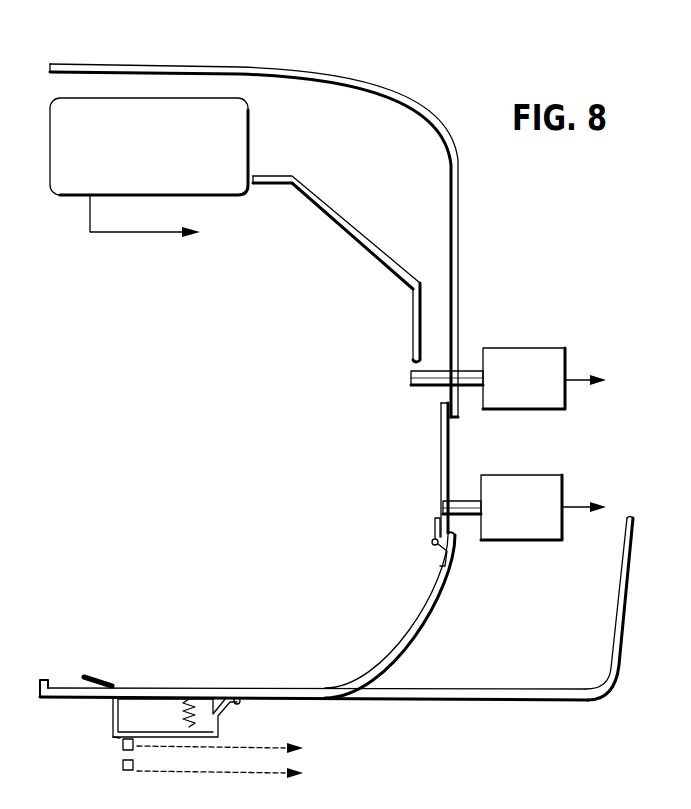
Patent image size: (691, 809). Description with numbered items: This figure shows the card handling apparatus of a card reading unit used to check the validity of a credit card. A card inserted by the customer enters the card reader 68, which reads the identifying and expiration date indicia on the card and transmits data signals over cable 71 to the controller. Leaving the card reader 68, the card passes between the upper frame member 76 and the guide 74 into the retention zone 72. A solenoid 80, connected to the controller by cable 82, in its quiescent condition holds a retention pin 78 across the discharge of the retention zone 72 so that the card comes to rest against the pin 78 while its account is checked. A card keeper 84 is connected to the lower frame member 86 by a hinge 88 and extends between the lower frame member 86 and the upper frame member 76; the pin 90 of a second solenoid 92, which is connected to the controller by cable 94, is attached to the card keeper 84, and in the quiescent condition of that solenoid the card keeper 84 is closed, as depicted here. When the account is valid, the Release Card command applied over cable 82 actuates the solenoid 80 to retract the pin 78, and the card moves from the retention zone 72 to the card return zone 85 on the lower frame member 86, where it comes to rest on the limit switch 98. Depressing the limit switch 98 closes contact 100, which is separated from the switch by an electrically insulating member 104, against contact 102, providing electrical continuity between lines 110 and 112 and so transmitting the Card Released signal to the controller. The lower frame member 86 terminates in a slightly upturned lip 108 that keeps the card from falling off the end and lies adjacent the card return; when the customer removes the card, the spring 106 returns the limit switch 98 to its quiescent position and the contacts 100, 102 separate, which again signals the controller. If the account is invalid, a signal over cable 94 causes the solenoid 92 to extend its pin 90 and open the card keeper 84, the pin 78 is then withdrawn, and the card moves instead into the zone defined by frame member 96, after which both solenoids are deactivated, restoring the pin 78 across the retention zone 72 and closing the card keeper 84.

The card reader 68 is at (234, 118).
The cable 71 is at (153, 233).
The retention zone 72 is at (437, 328).
The guide 74 is at (352, 232).
The upper frame member 76 is at (457, 253).
The retention pin 78 is at (410, 378).
The solenoid 80 is at (550, 368).
The cable 82 is at (577, 385).
The card keeper 84 is at (439, 462).
The card return zone 85 is at (145, 688).
The lower frame member 86 is at (393, 650).
The hinge 88 is at (432, 538).
The pin 90 is at (463, 498).
The solenoid 92 is at (520, 542).
The cable 94 is at (577, 500).
The frame member 96 is at (610, 633).
The limit switch 98 is at (87, 675).
The contact 100 is at (121, 745).
The contact 102 is at (121, 763).
The electrically insulating member 104 is at (117, 736).
The spring 106 is at (183, 713).
The upturned lip 108 is at (40, 688).
The line 110 is at (250, 746).
The line 112 is at (257, 775).